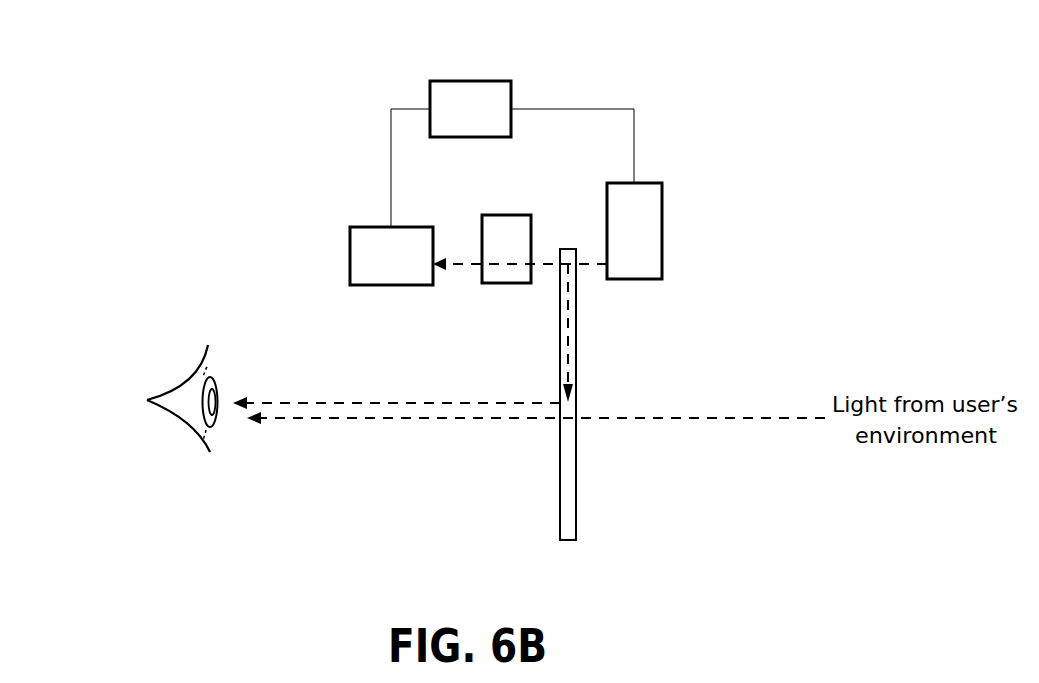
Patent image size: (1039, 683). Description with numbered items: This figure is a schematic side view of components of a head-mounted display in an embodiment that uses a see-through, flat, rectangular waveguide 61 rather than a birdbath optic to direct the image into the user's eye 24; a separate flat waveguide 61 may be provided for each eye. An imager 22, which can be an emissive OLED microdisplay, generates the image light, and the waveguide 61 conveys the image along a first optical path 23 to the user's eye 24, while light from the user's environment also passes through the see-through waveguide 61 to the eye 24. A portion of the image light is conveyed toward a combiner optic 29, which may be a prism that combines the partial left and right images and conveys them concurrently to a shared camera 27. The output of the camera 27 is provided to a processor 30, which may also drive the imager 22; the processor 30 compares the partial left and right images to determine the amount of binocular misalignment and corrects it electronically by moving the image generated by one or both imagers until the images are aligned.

The imager 22 is at (662, 245).
The first optical path 23 is at (413, 403).
The user's eye 24 is at (215, 382).
The camera 27 is at (350, 252).
The combiner optic 29 is at (503, 215).
The processor 30 is at (482, 81).
The flat waveguide 61 is at (576, 500).